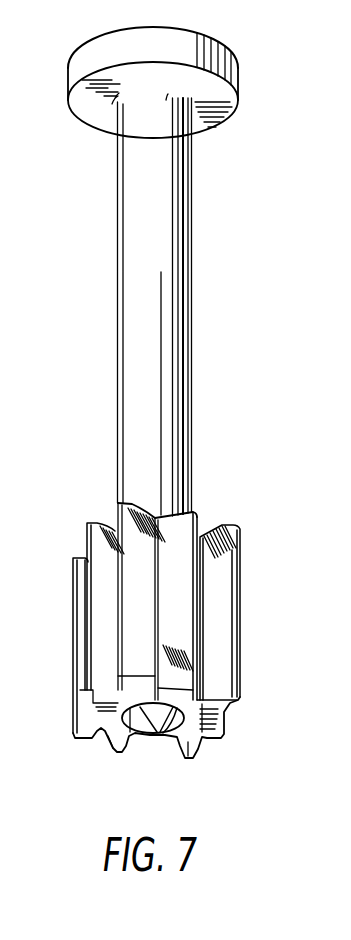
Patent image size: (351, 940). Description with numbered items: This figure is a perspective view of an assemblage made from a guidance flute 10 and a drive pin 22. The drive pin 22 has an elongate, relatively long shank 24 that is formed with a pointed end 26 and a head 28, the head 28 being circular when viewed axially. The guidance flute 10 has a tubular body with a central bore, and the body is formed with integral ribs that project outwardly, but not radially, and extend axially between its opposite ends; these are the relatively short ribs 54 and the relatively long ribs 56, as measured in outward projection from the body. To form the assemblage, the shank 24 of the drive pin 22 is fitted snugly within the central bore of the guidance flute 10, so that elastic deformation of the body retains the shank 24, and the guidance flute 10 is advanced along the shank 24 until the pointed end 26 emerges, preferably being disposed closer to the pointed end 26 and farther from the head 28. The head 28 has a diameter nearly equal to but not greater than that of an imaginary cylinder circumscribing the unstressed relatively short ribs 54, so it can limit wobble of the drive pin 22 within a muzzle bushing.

The guidance flute 10 is at (164, 642).
The drive pin 22 is at (164, 264).
The shank 24 is at (189, 186).
The pointed end 26 is at (153, 722).
The head 28 is at (215, 48).
The relatively short ribs 54 is at (197, 520).
The relatively long ribs 56 is at (117, 504).